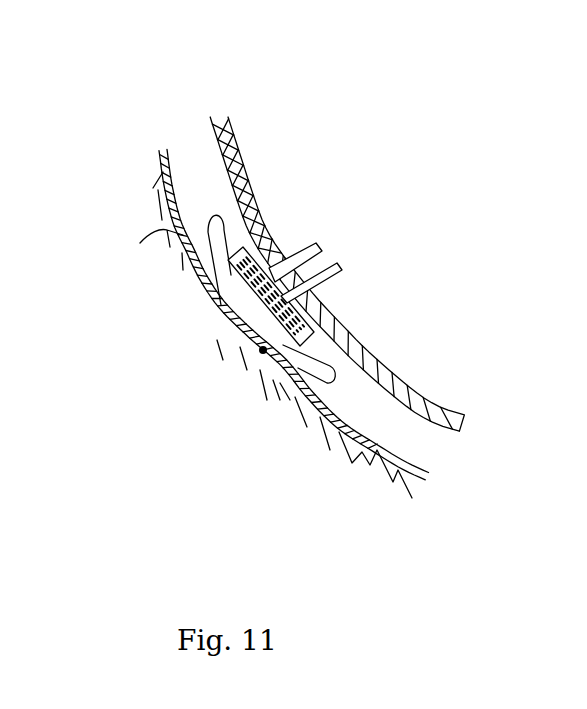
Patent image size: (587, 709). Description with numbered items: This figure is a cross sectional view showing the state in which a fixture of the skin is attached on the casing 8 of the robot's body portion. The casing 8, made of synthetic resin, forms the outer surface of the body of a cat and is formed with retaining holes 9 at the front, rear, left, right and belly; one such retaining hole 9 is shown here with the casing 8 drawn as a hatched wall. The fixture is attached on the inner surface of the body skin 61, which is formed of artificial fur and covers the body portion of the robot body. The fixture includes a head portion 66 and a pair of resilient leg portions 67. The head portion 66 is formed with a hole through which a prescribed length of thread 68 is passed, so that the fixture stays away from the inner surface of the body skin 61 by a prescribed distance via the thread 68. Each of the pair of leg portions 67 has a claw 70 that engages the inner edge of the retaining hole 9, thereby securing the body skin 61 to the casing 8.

The casing 8 is at (213, 130).
The retaining hole 9 is at (340, 318).
The body skin 61 is at (153, 188).
The head portion 66 is at (245, 330).
The resilient leg portion 67 is at (317, 243).
The thread 68 is at (177, 227).
The claw 70 is at (283, 250).